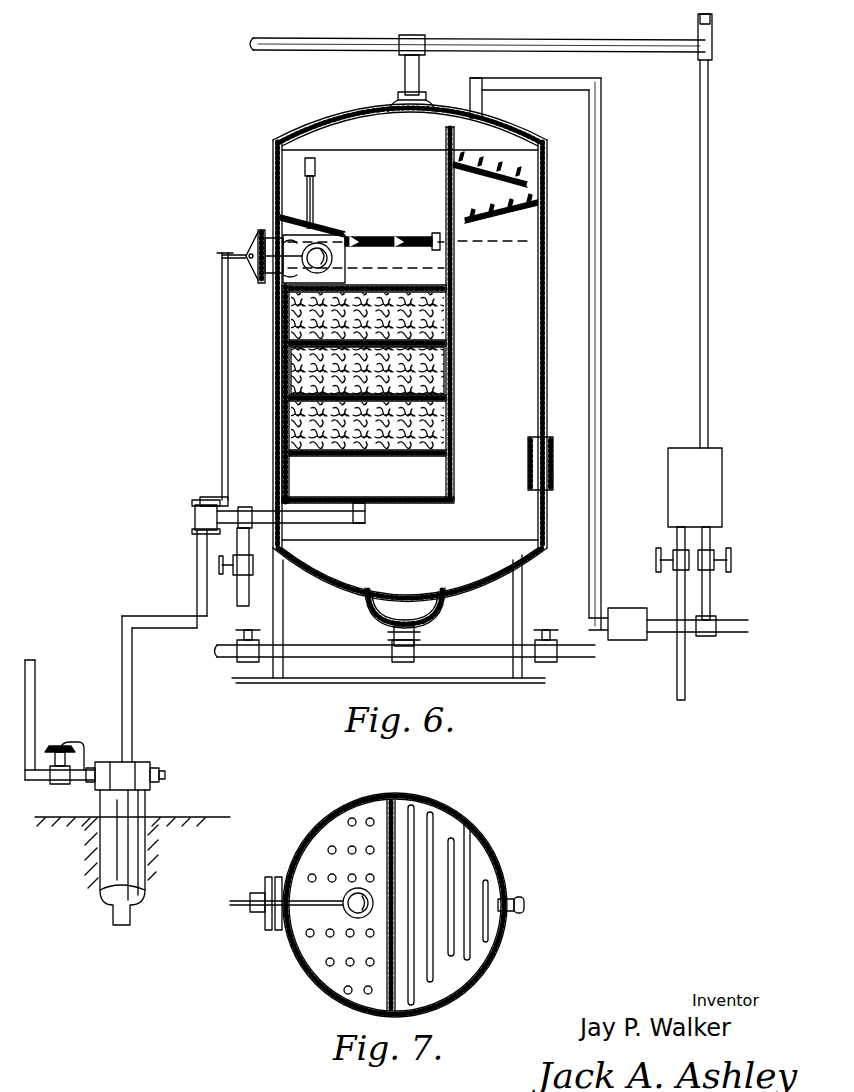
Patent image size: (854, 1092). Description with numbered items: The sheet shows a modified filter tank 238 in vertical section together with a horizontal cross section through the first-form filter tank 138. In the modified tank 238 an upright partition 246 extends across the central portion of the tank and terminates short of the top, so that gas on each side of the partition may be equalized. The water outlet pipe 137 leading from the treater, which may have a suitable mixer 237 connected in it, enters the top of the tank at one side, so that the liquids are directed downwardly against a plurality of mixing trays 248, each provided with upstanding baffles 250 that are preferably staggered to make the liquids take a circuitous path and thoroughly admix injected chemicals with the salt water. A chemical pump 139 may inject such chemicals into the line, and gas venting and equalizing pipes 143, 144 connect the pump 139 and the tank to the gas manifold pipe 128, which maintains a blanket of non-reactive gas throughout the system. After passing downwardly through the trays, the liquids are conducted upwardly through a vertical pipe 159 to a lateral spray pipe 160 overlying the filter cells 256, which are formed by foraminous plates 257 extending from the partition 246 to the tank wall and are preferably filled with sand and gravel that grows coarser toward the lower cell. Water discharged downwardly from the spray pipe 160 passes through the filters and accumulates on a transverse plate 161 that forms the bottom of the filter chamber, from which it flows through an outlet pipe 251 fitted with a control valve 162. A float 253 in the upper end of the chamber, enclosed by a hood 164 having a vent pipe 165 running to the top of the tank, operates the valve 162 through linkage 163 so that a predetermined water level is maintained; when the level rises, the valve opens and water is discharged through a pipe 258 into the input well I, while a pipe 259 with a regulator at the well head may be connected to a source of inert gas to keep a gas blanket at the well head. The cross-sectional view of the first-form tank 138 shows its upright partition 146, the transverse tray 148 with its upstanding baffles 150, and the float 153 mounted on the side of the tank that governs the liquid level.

In FIG. 6, the gas manifold pipe 128 is at (526, 42).
In FIG. 6, the gas venting and equalizing pipe 144 is at (403, 74).
In FIG. 6, the water outlet pipe 137 is at (602, 196).
In FIG. 7, the water outlet pipe 137 is at (522, 898).
In FIG. 6, the gas venting and equalizing pipe 143 is at (708, 259).
In FIG. 6, the chemical pump 139 is at (715, 476).
In FIG. 6, the mixer 237 is at (616, 608).
In FIG. 6, the tank 238 is at (547, 283).
In FIG. 6, the upstanding baffles 250 is at (505, 130).
In FIG. 6, the mixing trays 248 is at (470, 176).
In FIG. 6, the upright partition 246 is at (454, 272).
In FIG. 6, the vent pipe 165 is at (316, 176).
In FIG. 6, the hood 164 is at (318, 224).
In FIG. 6, the lateral spray pipe 160 is at (383, 238).
In FIG. 6, the float 253 is at (345, 259).
In FIG. 6, the filter cells 256 is at (454, 320).
In FIG. 6, the foraminous plates 257 is at (454, 363).
In FIG. 6, the transverse plate 161 is at (406, 503).
In FIG. 6, the outlet pipe 251 is at (319, 524).
In FIG. 6, the vertical pipe 159 is at (275, 363).
In FIG. 6, the linkage 163 is at (222, 419).
In FIG. 6, the control valve 162 is at (194, 517).
In FIG. 6, the pipe 258 is at (122, 668).
In FIG. 6, the pipe 259 is at (36, 697).
In FIG. 6, the input well I is at (132, 806).
In FIG. 7, the transverse tray 148 is at (448, 828).
In FIG. 7, the upstanding baffles 150 is at (456, 858).
In FIG. 7, the float 153 is at (360, 863).
In FIG. 7, the upright partition 146 is at (386, 948).
In FIG. 7, the filter tank 138 is at (468, 973).